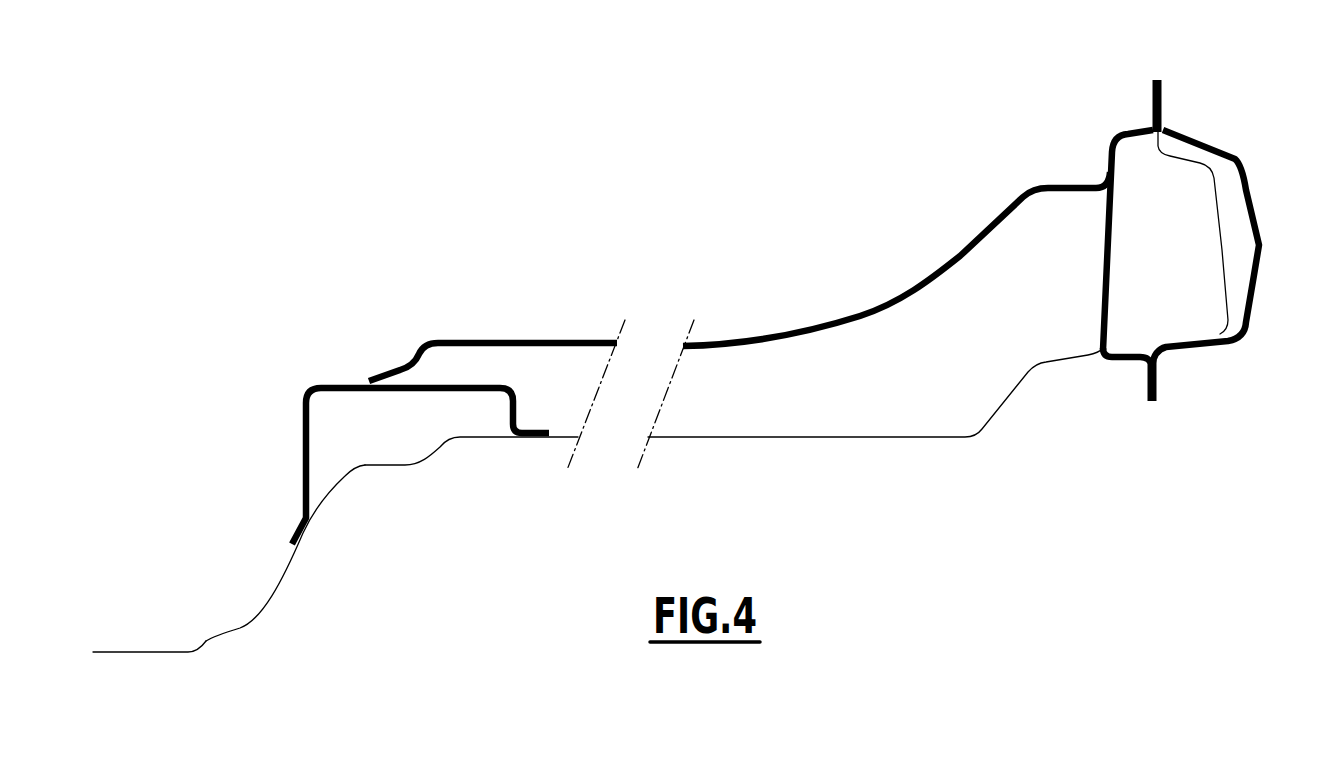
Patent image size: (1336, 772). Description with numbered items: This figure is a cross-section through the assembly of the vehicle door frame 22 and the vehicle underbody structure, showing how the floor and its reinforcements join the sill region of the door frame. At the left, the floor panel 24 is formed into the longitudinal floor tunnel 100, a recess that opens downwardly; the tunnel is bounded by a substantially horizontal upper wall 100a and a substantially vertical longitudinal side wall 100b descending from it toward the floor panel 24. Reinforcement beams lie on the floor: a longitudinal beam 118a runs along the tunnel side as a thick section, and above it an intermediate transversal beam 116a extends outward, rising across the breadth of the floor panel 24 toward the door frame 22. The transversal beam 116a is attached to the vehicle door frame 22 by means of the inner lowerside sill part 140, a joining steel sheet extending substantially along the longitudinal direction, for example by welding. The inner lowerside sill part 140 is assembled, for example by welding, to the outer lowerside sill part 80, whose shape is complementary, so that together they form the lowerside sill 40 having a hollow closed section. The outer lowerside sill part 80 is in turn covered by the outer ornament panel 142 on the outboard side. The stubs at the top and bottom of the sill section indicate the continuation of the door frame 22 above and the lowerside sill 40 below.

The floor tunnel 100 is at (325, 584).
The upper wall 100a is at (130, 653).
The side wall 100b is at (280, 577).
The longitudinal beam 118a is at (333, 385).
The intermediate transversal beam 116a is at (868, 310).
The floor panel 24 is at (862, 439).
The inner lowerside sill part 140 is at (1104, 265).
The outer ornament panel 142 is at (1250, 193).
The outer lowerside sill part 80 is at (1228, 274).
The vehicle door frame 22 is at (1143, 97).
The lowerside sill 40 is at (1157, 407).